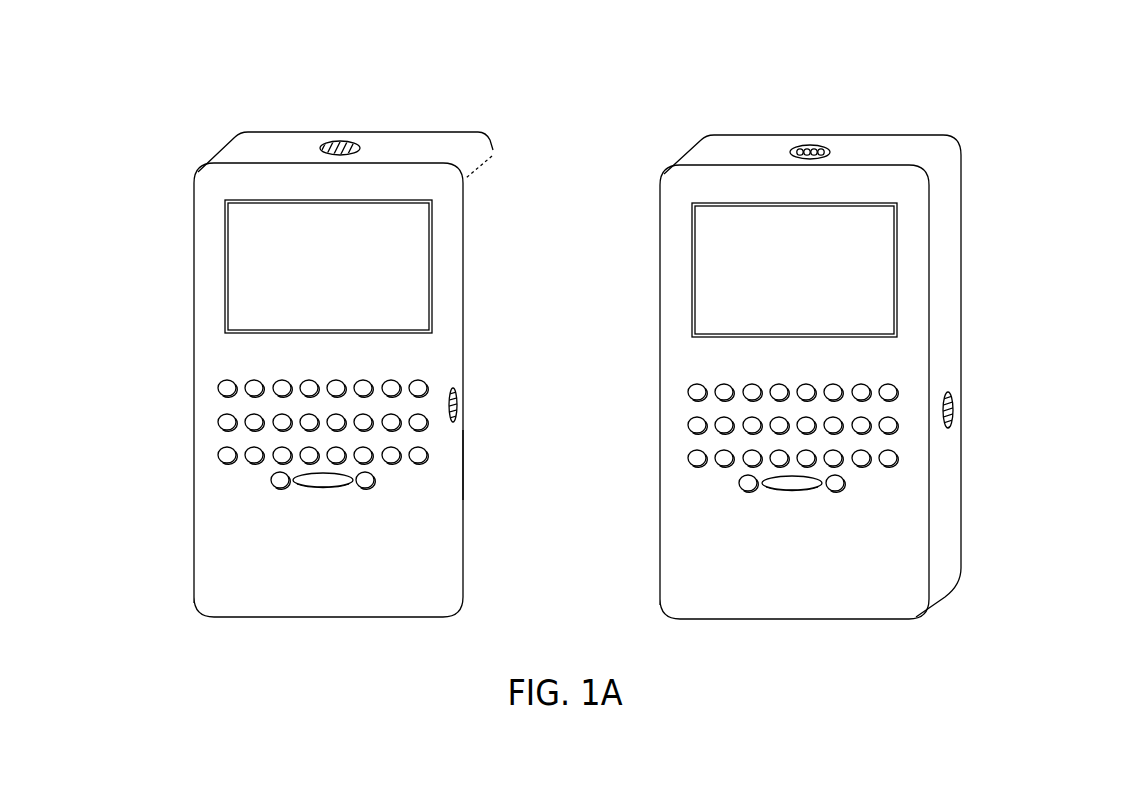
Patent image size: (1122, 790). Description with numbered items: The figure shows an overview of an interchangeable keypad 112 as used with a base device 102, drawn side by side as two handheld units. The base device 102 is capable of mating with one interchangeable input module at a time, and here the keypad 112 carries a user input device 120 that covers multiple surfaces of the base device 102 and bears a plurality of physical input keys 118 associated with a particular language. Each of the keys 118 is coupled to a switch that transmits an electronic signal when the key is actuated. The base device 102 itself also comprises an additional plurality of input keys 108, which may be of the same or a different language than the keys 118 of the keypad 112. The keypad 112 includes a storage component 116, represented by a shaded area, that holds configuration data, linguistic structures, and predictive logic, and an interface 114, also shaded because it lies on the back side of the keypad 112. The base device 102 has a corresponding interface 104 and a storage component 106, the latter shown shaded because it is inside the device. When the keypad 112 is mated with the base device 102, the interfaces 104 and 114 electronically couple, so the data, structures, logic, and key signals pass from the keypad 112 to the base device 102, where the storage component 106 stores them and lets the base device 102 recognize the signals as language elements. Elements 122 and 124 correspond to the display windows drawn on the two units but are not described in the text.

The base device 102 is at (945, 99).
The interface 104 is at (814, 144).
The storage component 106 is at (956, 402).
The plurality of input keys 108 is at (892, 441).
The interchangeable keypad 112 is at (497, 244).
The interface 114 is at (344, 140).
The storage component 116 is at (466, 410).
The input keys 118 is at (238, 377).
The user input device 120 is at (466, 460).
The display of second mobile device 122 is at (328, 266).
The display of first mobile device 124 is at (794, 270).